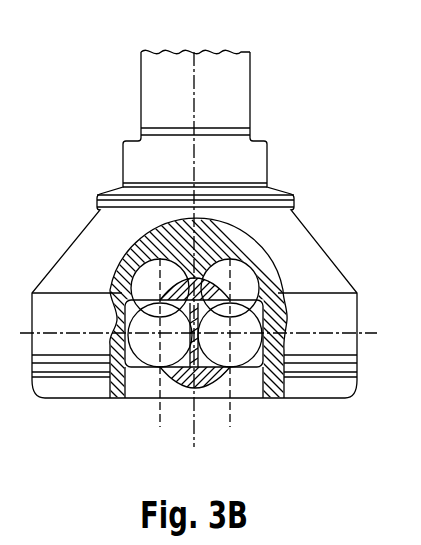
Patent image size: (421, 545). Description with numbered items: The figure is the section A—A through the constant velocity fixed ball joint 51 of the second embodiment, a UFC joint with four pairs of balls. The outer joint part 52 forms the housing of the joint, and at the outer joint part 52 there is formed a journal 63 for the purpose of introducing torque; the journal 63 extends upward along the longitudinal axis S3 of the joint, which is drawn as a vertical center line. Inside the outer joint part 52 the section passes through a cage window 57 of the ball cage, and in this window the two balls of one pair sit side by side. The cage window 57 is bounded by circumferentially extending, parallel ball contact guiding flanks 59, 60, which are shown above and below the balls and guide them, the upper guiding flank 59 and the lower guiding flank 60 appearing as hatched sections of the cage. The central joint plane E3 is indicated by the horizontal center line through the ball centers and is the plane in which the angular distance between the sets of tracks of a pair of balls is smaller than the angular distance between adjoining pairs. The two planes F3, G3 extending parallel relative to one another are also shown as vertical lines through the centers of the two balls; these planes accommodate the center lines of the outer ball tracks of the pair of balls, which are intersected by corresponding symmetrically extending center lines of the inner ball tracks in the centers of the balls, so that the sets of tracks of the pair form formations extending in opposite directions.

The constant velocity joint 51 is at (93, 157).
The outer joint part 52 is at (62, 272).
The cage windows 57 is at (223, 283).
The ball contact guiding flank 59 is at (137, 285).
The ball contact guiding flank 60 is at (263, 395).
The journal 63 is at (240, 109).
The longitudinal axis S3 is at (196, 63).
The central joint plane E3 is at (369, 333).
The plane of ball centers F3 is at (160, 410).
The plane of ball centers G3 is at (231, 417).